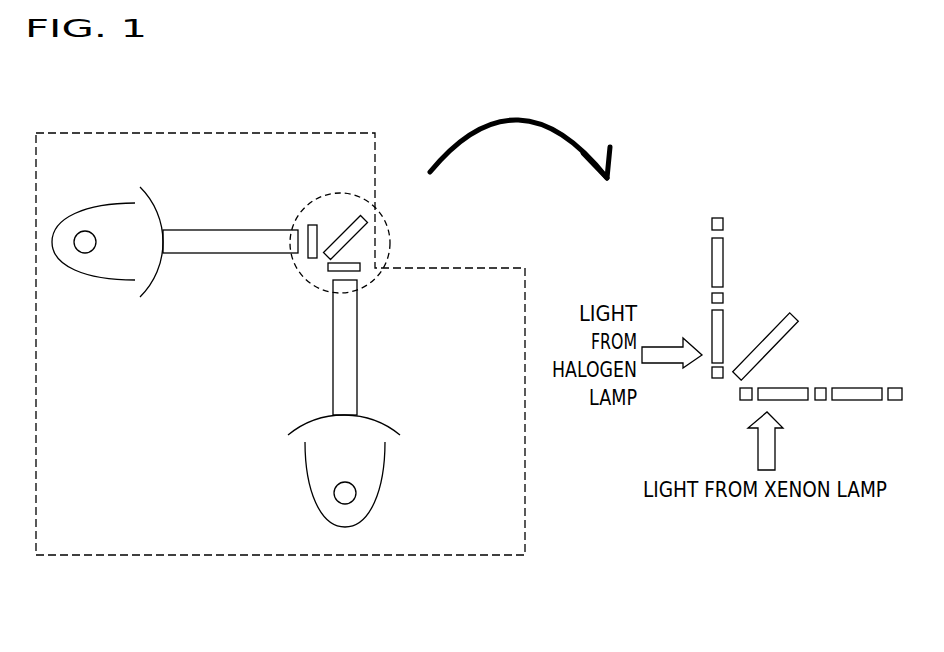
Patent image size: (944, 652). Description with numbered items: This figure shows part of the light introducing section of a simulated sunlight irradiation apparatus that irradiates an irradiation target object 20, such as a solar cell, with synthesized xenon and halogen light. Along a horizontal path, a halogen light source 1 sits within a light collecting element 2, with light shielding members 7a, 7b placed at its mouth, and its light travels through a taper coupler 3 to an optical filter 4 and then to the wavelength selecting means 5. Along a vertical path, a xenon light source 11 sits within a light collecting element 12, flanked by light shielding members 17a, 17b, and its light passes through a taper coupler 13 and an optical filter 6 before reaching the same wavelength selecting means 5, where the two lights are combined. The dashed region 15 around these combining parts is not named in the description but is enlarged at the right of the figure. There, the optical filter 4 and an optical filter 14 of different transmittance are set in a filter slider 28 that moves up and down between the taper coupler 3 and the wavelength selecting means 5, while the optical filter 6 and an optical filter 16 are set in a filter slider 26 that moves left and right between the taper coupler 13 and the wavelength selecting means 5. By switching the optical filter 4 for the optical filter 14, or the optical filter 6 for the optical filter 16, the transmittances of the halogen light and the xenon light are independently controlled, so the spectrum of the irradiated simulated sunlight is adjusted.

The halogen light source 1 is at (83, 232).
The light collecting element 2 is at (103, 281).
The taper coupler 3 is at (252, 229).
The optical filter 4 is at (312, 224).
The wavelength selecting means 5 is at (348, 222).
The optical filter 6 is at (332, 267).
The light shielding member 7a is at (156, 207).
The light shielding member 7b is at (156, 279).
The xenon light source 11 is at (334, 495).
The light collecting element 12 is at (305, 462).
The taper coupler 13 is at (333, 340).
The optical filter 14 is at (724, 262).
The optical combining section 15 is at (388, 233).
The optical filter 16 is at (857, 387).
The light shielding member 17a is at (308, 418).
The light shielding member 17b is at (380, 418).
The irradiation target object 20 is at (280, 556).
The filter slider 26 is at (895, 387).
The filter slider 28 is at (724, 224).